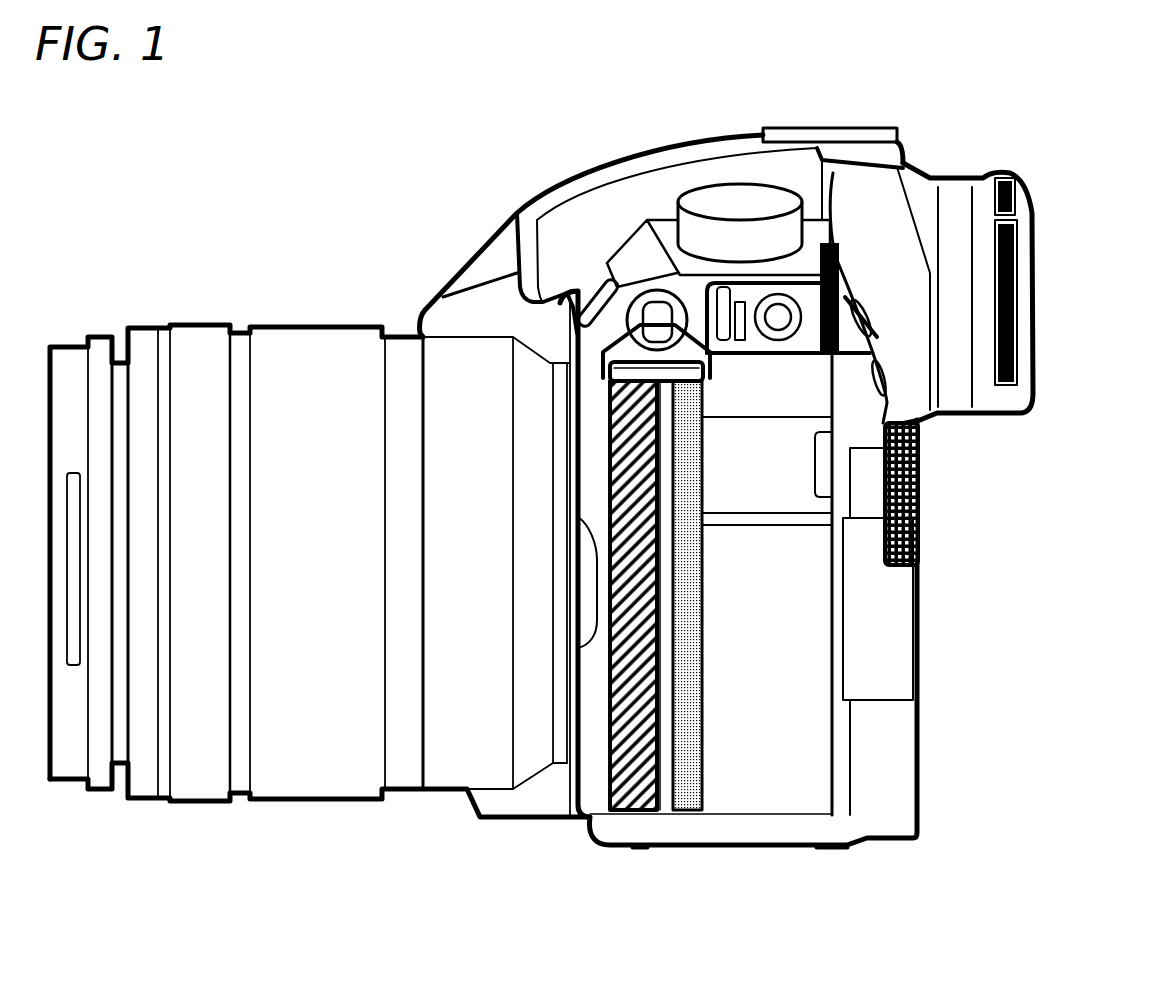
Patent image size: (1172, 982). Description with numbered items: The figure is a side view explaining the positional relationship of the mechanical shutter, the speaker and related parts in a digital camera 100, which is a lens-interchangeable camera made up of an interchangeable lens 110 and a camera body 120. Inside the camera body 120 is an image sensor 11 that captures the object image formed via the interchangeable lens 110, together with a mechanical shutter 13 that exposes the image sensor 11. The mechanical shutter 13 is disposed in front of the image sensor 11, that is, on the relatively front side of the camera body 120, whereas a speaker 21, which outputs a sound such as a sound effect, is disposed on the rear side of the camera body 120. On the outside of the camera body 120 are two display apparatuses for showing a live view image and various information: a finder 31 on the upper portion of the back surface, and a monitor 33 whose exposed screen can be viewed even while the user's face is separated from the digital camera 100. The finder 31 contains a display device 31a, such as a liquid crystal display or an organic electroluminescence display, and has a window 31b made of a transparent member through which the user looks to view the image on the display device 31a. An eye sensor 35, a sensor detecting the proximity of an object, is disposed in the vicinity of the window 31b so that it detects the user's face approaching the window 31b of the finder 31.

The digital camera 100 is at (263, 102).
The interchangeable lens 110 is at (302, 326).
The camera body 120 is at (722, 137).
The image sensor 11 is at (687, 805).
The mechanical shutter 13 is at (633, 812).
The speaker 21 is at (920, 493).
The finder 31 is at (1040, 287).
The display device 31a is at (827, 242).
The window 31b is at (1013, 248).
The monitor 33 is at (920, 666).
The eye sensor 35 is at (1003, 176).